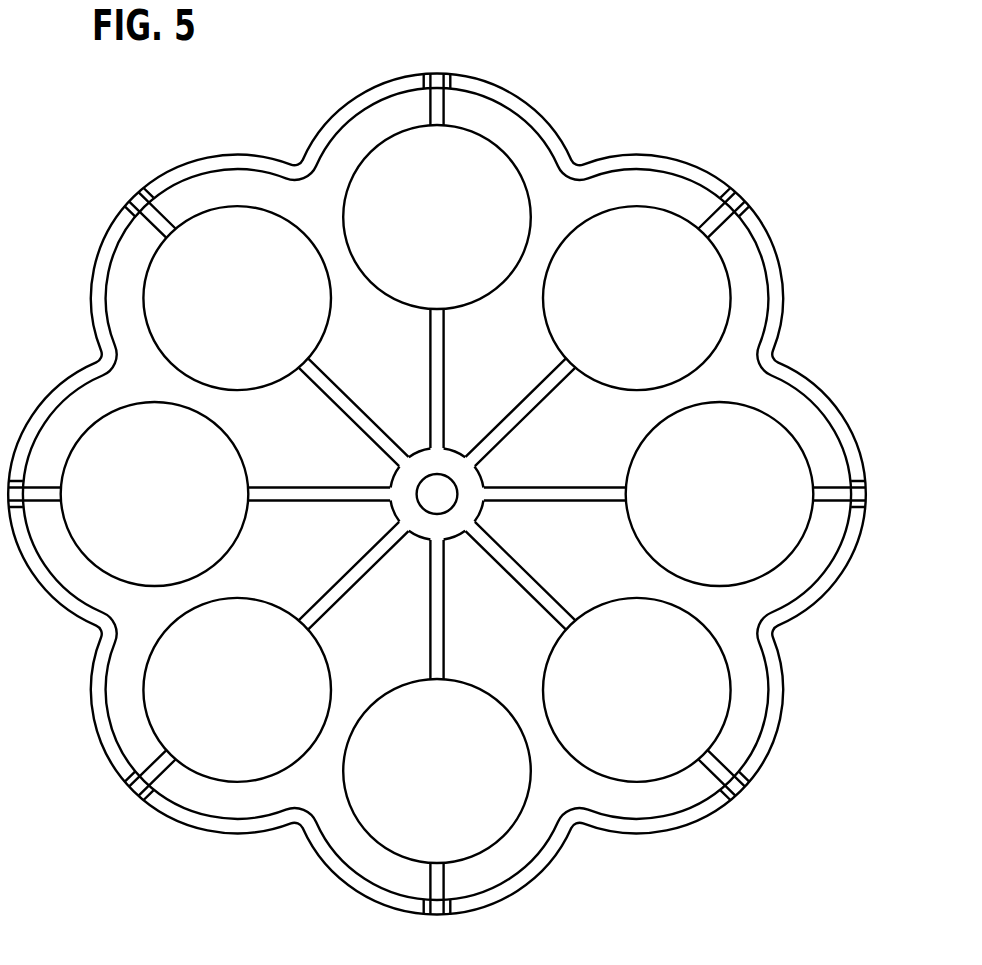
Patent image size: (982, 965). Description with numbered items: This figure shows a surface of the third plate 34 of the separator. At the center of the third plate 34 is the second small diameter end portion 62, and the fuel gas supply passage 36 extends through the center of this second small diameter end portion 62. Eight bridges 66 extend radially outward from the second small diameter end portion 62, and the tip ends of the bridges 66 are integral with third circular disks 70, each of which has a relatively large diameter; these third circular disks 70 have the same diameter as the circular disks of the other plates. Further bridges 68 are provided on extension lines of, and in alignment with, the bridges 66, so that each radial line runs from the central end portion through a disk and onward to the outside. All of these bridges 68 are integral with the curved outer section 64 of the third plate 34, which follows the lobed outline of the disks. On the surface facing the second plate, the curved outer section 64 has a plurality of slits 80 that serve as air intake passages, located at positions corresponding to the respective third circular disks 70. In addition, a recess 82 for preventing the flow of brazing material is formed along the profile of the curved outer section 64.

The third plate 34 is at (670, 114).
The fuel gas supply passage 36 is at (432, 499).
The second small diameter end portion 62 is at (450, 459).
The curved outer section 64 is at (838, 395).
The bridges 66 is at (554, 490).
The bridges 68 is at (715, 770).
The third circular disks 70 is at (713, 416).
The slits 80 is at (848, 526).
The recess 82 is at (825, 569).